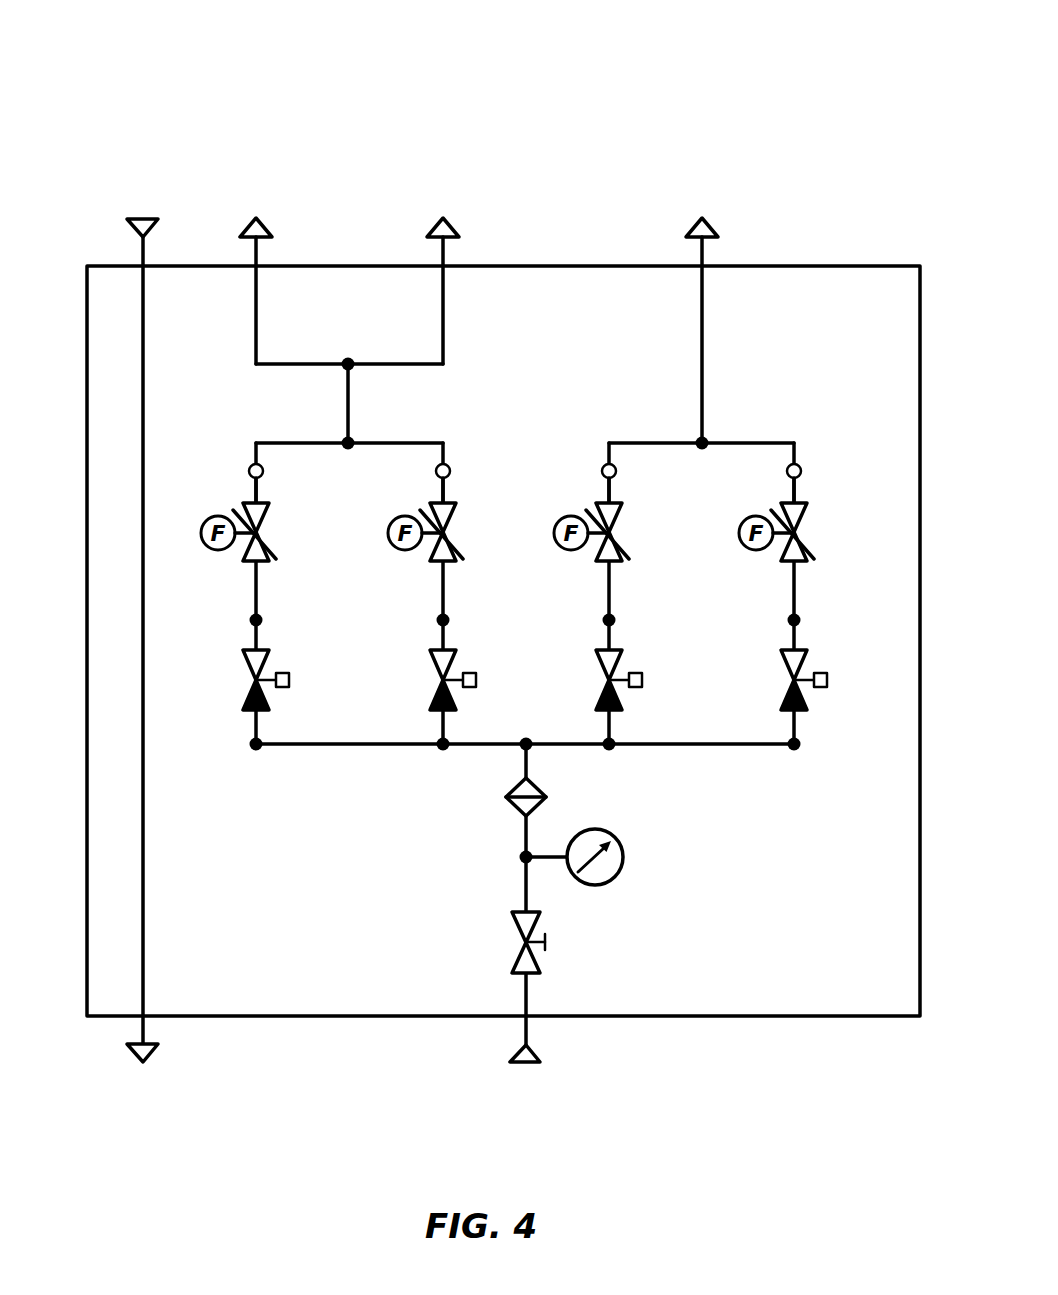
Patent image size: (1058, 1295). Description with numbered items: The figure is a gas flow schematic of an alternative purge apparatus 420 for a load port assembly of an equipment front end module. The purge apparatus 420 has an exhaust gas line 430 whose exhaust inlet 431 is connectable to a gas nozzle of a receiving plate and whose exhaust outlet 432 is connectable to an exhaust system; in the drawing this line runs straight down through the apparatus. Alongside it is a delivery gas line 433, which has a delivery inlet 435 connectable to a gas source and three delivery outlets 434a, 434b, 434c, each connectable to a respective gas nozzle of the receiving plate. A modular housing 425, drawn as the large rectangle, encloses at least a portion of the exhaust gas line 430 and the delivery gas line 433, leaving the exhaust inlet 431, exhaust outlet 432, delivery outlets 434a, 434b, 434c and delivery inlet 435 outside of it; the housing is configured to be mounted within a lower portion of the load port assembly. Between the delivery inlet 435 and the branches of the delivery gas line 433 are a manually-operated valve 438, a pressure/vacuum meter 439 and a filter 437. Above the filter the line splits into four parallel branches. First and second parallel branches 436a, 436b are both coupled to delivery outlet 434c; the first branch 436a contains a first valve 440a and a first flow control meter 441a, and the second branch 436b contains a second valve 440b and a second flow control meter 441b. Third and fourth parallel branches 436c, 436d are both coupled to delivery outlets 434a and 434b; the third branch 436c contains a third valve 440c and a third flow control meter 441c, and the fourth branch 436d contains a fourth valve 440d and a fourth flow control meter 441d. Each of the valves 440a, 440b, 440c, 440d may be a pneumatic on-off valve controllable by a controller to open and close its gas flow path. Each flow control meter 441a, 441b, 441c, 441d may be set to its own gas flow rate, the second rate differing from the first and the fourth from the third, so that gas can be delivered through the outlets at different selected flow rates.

The purge apparatus 420 is at (160, 64).
The modular housing 425 is at (87, 438).
The exhaust gas line 430 is at (145, 903).
The exhaust inlet 431 is at (142, 218).
The exhaust outlet 432 is at (157, 1057).
The delivery gas line 433 is at (520, 893).
The delivery outlet 434a is at (255, 218).
The delivery outlet 434b is at (442, 218).
The delivery outlet 434c is at (701, 218).
The delivery inlet 435 is at (538, 1050).
The first branch 436a is at (610, 585).
The second branch 436b is at (795, 585).
The third branch 436c is at (257, 585).
The fourth branch 436d is at (444, 585).
The filter 437 is at (515, 780).
The manually-operated valve 438 is at (515, 928).
The pressure/vacuum meter 439 is at (624, 855).
The first valve 440a is at (618, 658).
The second valve 440b is at (803, 658).
The third valve 440c is at (265, 658).
The fourth valve 440d is at (452, 658).
The first flow control meter 441a is at (618, 519).
The second flow control meter 441b is at (803, 519).
The third flow control meter 441c is at (265, 519).
The fourth flow control meter 441d is at (452, 519).